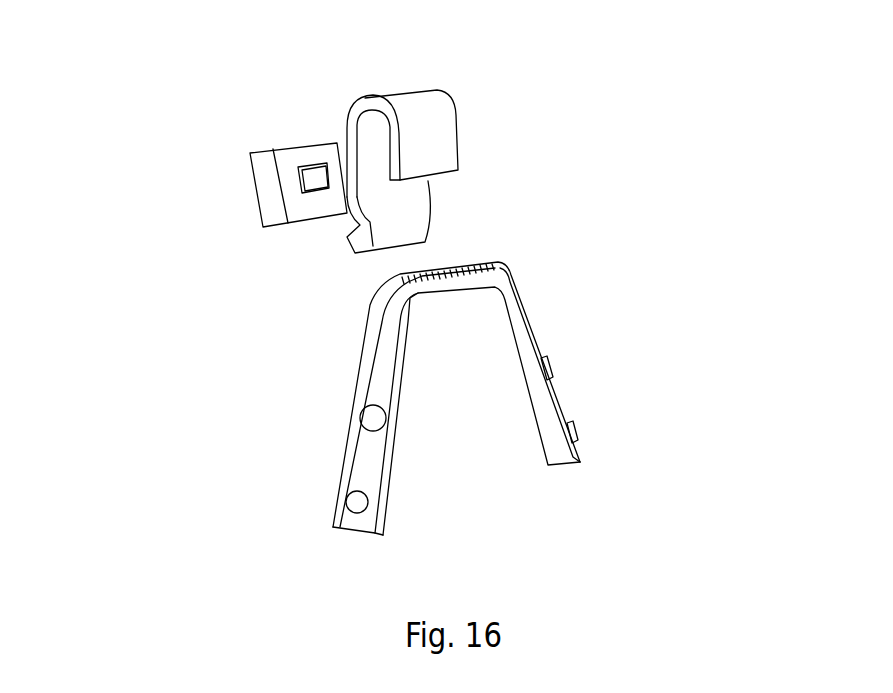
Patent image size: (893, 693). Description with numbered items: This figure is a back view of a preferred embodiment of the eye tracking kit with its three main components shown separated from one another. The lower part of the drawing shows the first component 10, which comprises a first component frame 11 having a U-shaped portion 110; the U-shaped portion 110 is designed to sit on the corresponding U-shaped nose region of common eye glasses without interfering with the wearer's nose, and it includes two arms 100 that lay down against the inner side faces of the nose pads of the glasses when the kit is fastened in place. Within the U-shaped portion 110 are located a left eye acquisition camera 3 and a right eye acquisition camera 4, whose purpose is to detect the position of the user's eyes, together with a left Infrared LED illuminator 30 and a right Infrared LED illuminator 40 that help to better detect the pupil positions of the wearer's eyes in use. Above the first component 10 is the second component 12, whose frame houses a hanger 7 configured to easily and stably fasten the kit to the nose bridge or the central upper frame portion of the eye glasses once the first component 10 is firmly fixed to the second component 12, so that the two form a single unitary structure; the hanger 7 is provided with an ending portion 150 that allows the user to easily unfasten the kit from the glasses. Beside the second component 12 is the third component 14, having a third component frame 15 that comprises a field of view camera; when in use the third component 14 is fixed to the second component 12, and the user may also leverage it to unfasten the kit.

The left eye acquisition camera 3 is at (380, 407).
The right eye acquisition camera 4 is at (558, 367).
The hanger 7 is at (420, 132).
The first component 10 is at (413, 403).
The first component frame 11 is at (362, 377).
The second component 12 is at (501, 173).
The third component 14 is at (234, 203).
The third component frame 15 is at (273, 160).
The left Infrared LED illuminator 30 is at (355, 497).
The right Infrared LED illuminator 40 is at (580, 423).
The arm 100 is at (413, 403).
The U-shaped portion 110 is at (365, 448).
The ending portion 150 is at (405, 242).